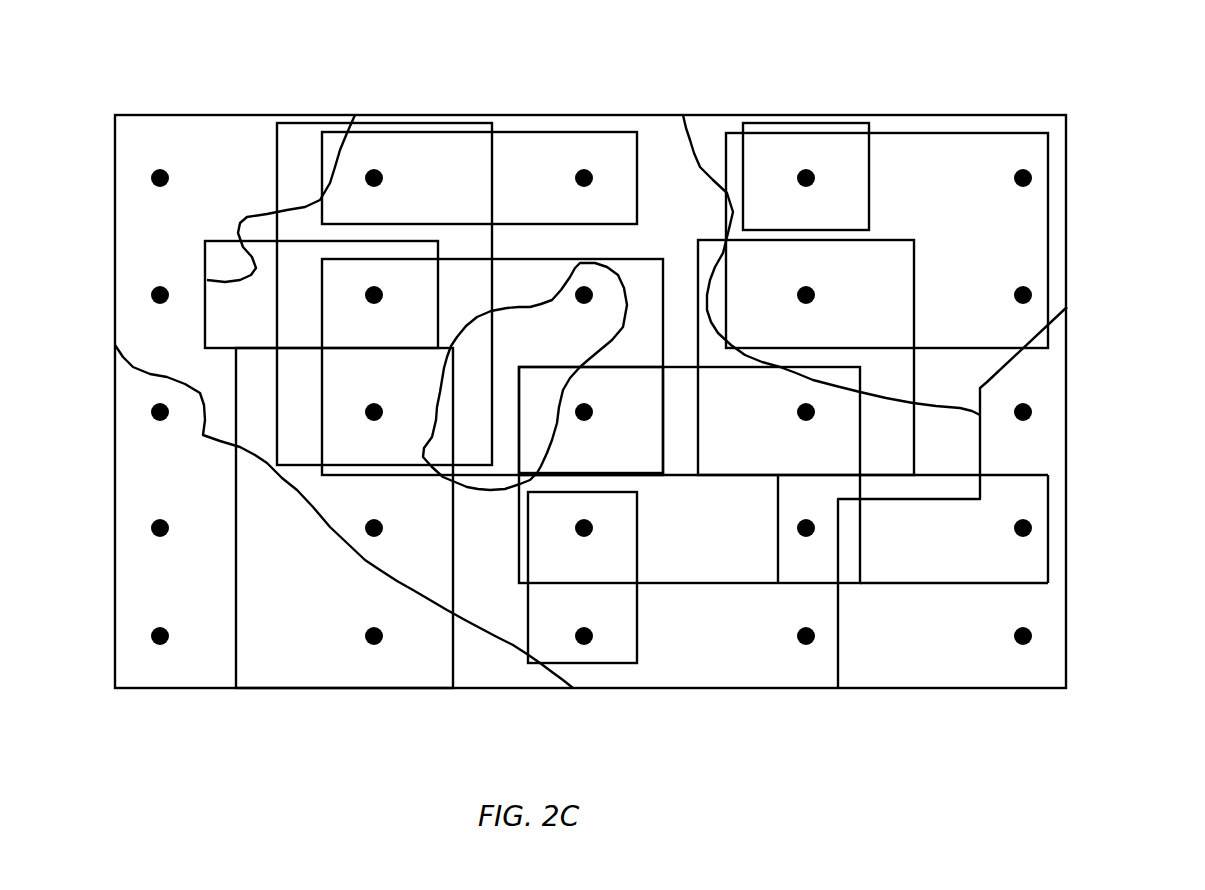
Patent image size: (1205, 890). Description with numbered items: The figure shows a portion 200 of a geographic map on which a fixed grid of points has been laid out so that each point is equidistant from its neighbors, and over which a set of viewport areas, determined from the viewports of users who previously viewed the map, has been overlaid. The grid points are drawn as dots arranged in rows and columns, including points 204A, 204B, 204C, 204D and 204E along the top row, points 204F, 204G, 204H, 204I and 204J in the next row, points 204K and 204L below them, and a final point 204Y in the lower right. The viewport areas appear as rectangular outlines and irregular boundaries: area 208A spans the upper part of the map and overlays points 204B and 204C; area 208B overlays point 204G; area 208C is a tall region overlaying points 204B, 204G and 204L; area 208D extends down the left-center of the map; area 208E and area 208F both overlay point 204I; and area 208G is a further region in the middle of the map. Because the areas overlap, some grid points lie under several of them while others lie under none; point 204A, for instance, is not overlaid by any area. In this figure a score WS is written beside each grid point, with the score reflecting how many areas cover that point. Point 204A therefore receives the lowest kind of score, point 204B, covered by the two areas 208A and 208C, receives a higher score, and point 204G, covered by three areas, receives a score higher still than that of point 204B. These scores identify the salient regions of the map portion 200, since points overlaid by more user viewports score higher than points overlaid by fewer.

The portion of a geographic map 200 is at (590, 382).
The grid point 204A is at (201, 161).
The grid point 204B is at (423, 161).
The grid point 204C is at (628, 161).
The grid point 204D is at (870, 161).
The grid point 204E is at (1072, 161).
The grid point 204F is at (110, 297).
The grid point 204G is at (397, 292).
The grid point 204H is at (561, 300).
The grid point 204I is at (849, 278).
The grid point 204J is at (1064, 278).
The grid point 204K is at (119, 416).
The grid point 204L is at (334, 443).
The grid point 204Y is at (1076, 616).
The viewport area 208A is at (479, 117).
The viewport area 208B is at (239, 293).
The viewport area 208C is at (327, 249).
The viewport area 208D is at (322, 550).
The viewport area 208E is at (943, 331).
The viewport area 208F is at (940, 401).
The viewport area 208G is at (568, 263).